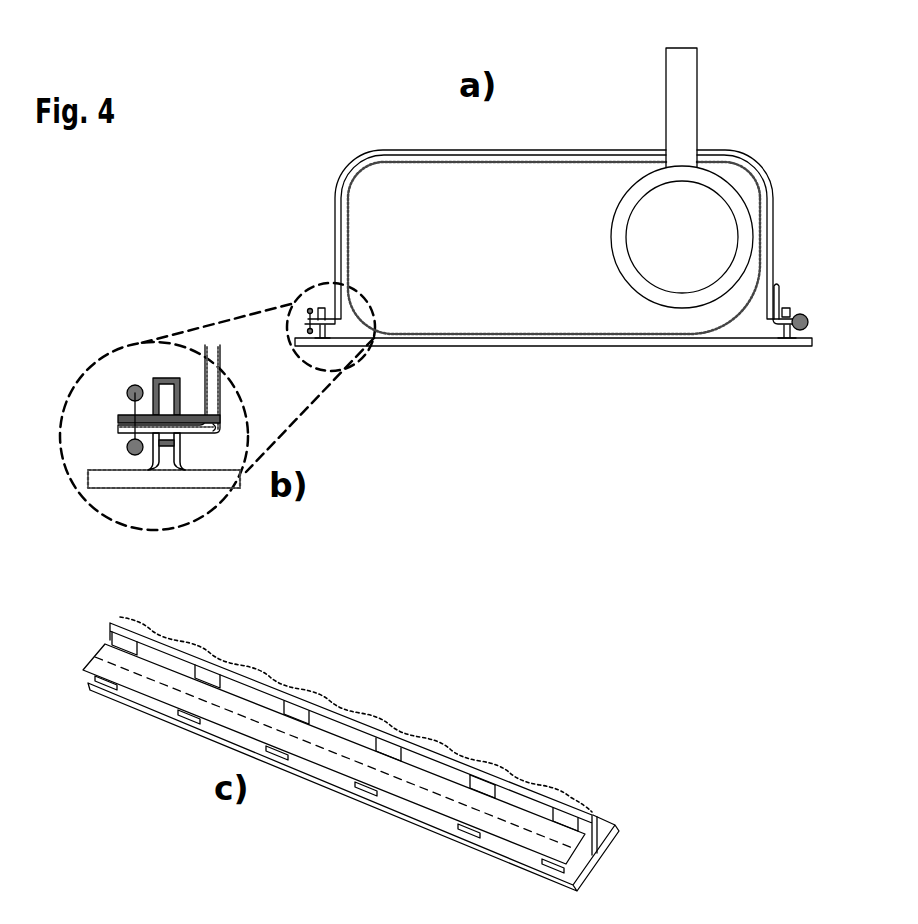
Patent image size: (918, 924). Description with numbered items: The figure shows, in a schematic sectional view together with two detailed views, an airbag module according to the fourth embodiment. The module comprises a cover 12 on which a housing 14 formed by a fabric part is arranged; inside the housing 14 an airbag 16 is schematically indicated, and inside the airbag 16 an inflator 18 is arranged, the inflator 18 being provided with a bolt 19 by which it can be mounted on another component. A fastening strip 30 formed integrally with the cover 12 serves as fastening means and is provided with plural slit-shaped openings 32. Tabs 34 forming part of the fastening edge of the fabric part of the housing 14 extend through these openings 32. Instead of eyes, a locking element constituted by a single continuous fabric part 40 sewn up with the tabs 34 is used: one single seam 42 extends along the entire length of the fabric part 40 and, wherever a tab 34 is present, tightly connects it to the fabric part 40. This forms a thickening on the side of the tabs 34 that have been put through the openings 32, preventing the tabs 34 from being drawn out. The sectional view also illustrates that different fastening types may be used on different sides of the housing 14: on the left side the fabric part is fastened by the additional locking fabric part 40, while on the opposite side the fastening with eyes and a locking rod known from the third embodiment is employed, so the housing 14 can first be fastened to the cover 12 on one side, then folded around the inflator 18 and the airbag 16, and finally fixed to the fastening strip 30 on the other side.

The cover 12 is at (608, 341).
The housing 14 is at (773, 258).
The airbag 16 is at (751, 306).
The inflator 18 is at (718, 167).
The bolt 19 is at (688, 60).
The fastening strip 30 is at (165, 386).
The slit-shaped openings 32 is at (213, 428).
The tabs 34 is at (483, 790).
The fabric part 40 is at (120, 415).
The seam 42 is at (118, 449).